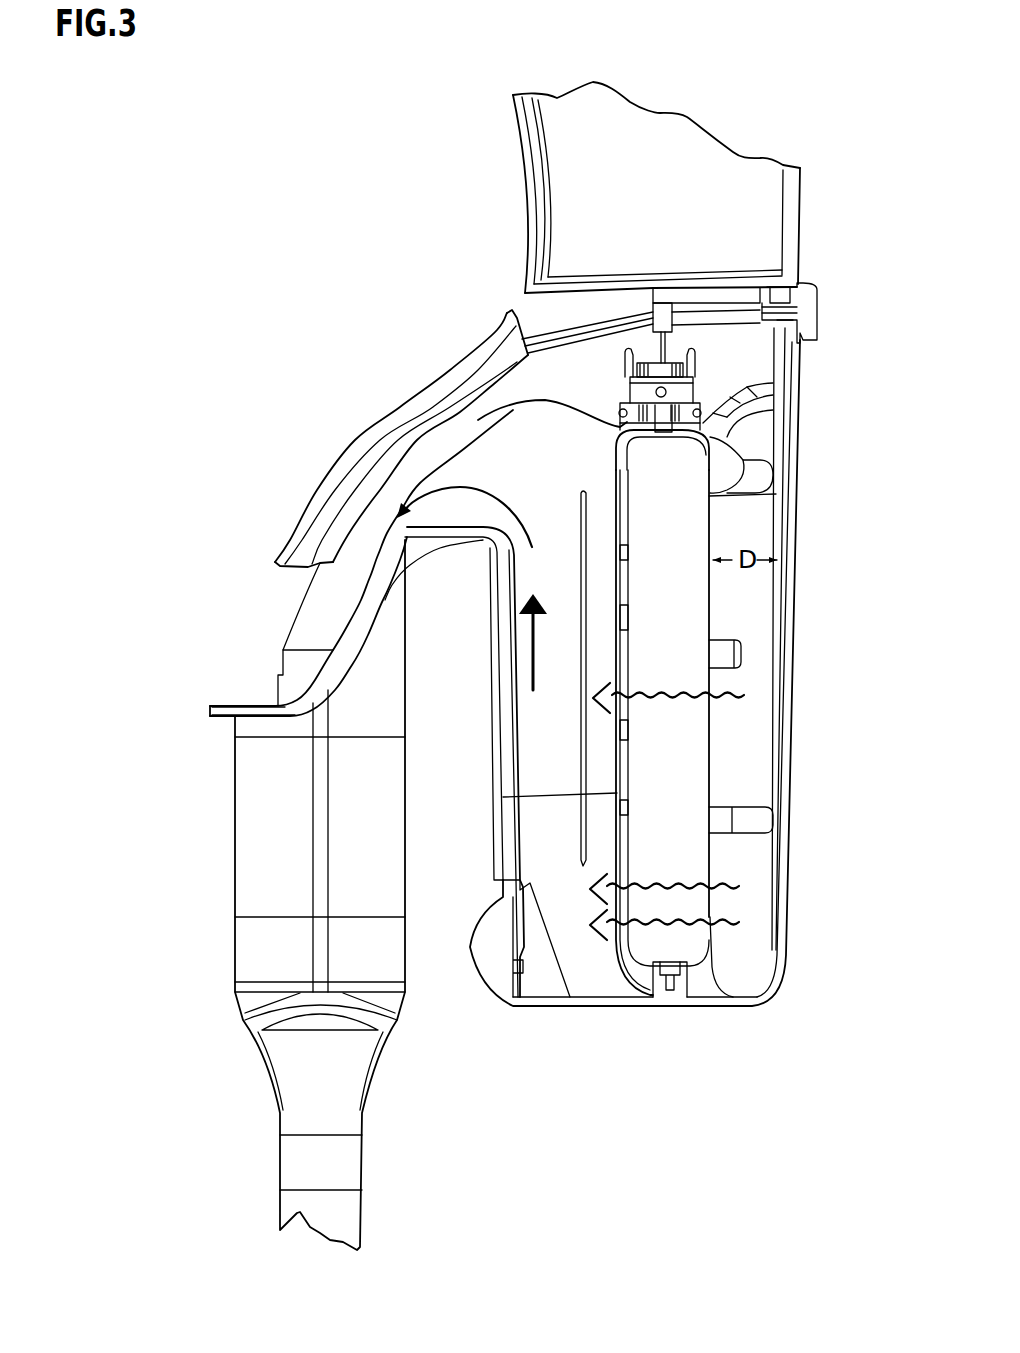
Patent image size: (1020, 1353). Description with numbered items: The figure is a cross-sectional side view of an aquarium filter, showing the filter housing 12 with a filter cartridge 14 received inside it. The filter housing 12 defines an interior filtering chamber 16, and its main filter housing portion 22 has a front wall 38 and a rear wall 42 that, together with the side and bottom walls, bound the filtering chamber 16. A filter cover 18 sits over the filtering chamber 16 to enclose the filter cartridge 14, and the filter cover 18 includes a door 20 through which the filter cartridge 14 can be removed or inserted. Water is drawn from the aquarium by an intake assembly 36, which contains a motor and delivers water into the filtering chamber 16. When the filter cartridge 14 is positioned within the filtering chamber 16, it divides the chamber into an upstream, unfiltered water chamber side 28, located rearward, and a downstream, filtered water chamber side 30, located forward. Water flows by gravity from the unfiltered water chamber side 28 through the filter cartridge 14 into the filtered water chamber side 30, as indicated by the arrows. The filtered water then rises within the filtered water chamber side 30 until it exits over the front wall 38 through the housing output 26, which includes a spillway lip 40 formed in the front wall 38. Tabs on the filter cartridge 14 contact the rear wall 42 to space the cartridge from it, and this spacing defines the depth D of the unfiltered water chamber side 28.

The filter housing 12 is at (721, 1014).
The filter cartridge 14 is at (708, 417).
The interior filtering chamber 16 is at (599, 410).
The filter cover 18 is at (417, 390).
The door 20 is at (582, 124).
The main filter housing portion 22 is at (805, 498).
The housing output 26 is at (328, 630).
The upstream, unfiltered water chamber side 28 is at (763, 763).
The downstream, filtered water chamber side 30 is at (572, 776).
The intake assembly 36 is at (182, 979).
The front wall 38 is at (490, 672).
The spillway lip 40 is at (248, 705).
The rear wall 42 is at (788, 664).